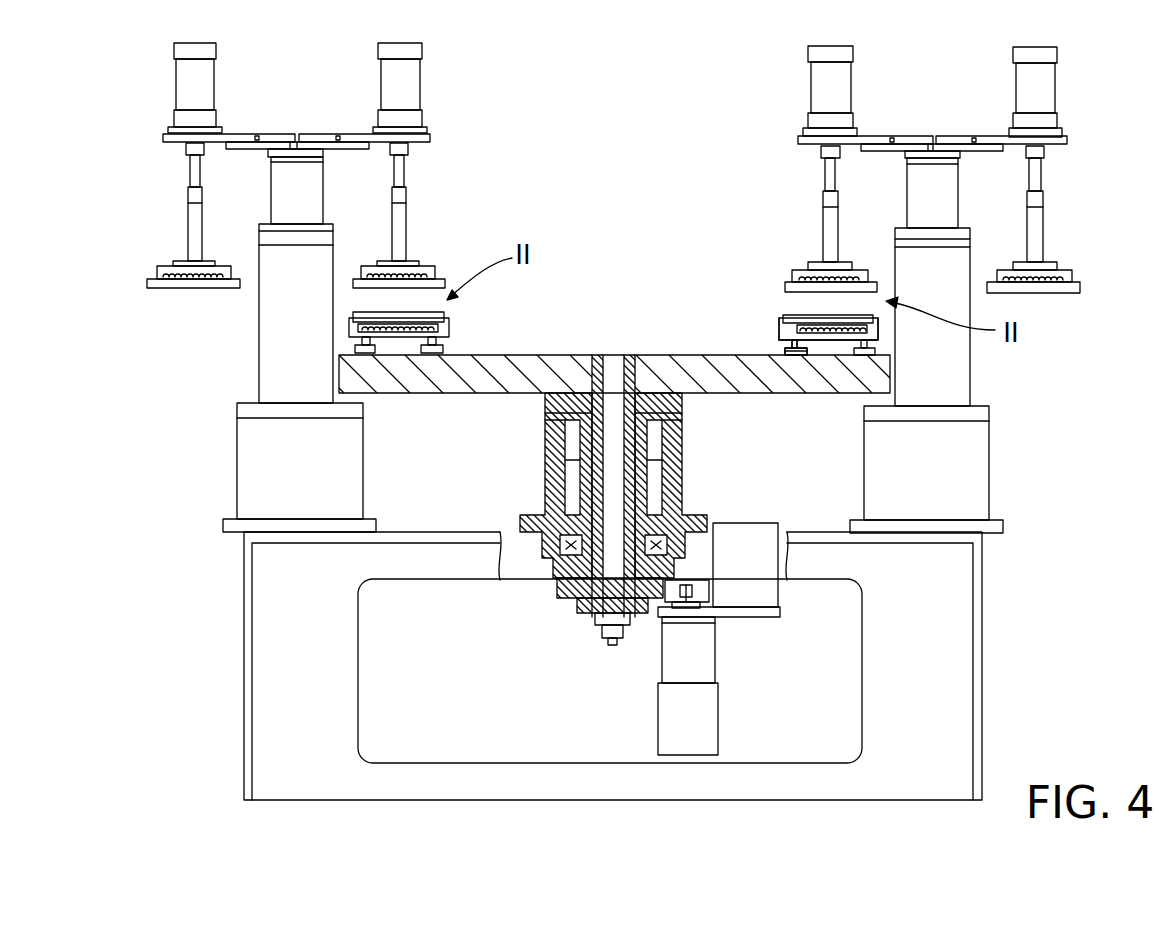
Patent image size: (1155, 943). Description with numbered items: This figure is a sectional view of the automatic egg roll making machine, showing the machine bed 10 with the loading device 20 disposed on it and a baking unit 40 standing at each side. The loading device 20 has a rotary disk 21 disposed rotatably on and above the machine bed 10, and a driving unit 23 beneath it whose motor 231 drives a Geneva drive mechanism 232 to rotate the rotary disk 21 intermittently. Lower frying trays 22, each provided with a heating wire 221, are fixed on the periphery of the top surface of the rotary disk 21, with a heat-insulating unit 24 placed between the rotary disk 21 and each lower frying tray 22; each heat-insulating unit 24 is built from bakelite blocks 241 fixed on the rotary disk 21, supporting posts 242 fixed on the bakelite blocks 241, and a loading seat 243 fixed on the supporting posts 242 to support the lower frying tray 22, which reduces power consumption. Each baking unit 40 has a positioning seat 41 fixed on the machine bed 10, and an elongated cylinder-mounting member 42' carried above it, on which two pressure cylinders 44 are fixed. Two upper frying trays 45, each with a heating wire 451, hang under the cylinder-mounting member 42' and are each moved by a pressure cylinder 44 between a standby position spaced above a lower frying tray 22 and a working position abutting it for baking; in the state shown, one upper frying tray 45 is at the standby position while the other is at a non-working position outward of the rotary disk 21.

The machine bed 10 is at (990, 597).
The loading device 20 is at (692, 350).
The rotary disk 21 is at (667, 362).
The lower frying tray 22 is at (820, 330).
The heating wire 221 is at (786, 316).
The driving unit 23 is at (652, 625).
The motor 231 is at (668, 724).
The Geneva drive mechanism 232 is at (573, 600).
The heat-insulating unit 24 is at (772, 342).
The bakelite block 241 is at (798, 358).
The supporting post 242 is at (803, 347).
The loading seat 243 is at (779, 328).
The baking unit 40 is at (1062, 184).
The positioning seat 41 is at (972, 438).
The cylinder-mounting member 42' is at (932, 107).
The pressure cylinder 44 is at (822, 118).
The upper frying tray 45 is at (873, 285).
The heating wire 451 is at (843, 277).